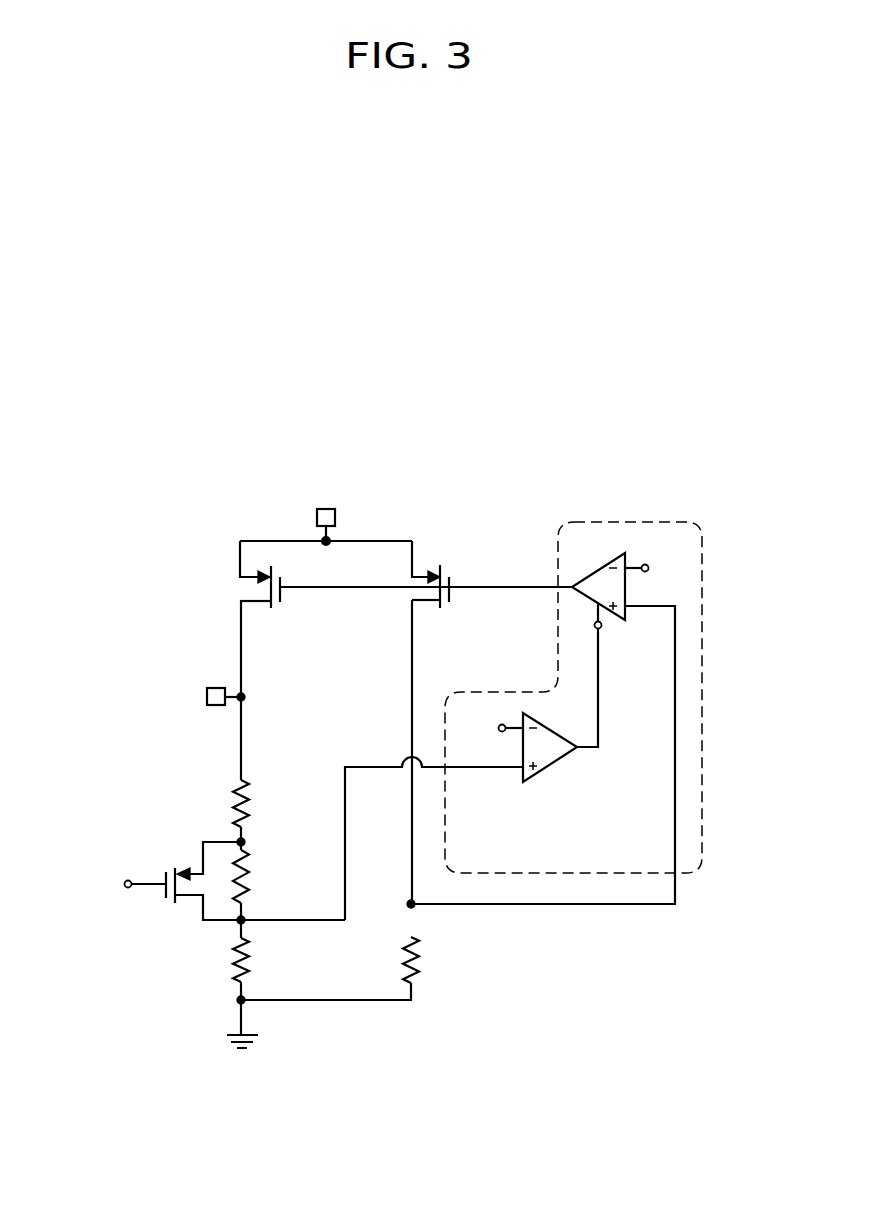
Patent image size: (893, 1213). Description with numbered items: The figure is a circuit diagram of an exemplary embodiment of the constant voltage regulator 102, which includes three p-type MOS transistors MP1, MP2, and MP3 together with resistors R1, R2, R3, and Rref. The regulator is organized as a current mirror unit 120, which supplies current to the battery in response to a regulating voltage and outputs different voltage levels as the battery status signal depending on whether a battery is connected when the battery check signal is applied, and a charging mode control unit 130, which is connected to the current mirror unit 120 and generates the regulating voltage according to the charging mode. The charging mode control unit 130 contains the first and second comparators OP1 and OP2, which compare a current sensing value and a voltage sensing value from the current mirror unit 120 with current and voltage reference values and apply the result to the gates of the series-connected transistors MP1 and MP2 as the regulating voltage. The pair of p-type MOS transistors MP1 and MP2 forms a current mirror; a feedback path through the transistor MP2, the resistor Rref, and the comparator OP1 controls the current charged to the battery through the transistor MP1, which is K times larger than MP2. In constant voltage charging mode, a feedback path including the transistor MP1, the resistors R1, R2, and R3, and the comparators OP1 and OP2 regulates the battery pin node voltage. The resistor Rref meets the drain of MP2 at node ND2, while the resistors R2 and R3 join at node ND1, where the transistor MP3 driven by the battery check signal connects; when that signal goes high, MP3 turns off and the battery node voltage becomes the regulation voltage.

The constant voltage regulator 102 is at (147, 578).
The current mirror unit 120 is at (350, 694).
The charging mode control unit 130 is at (702, 706).
The p-type MOS transistor MP1 is at (266, 555).
The p-type MOS transistor MP2 is at (436, 555).
The p-type MOS transistor MP3 is at (181, 855).
The first comparator OP1 is at (592, 555).
The second comparator OP2 is at (557, 713).
The resistor R1 is at (255, 803).
The resistor R2 is at (255, 876).
The resistor R3 is at (255, 960).
The resistor Rref is at (437, 960).
The first node ND1 is at (238, 924).
The second node ND2 is at (408, 900).